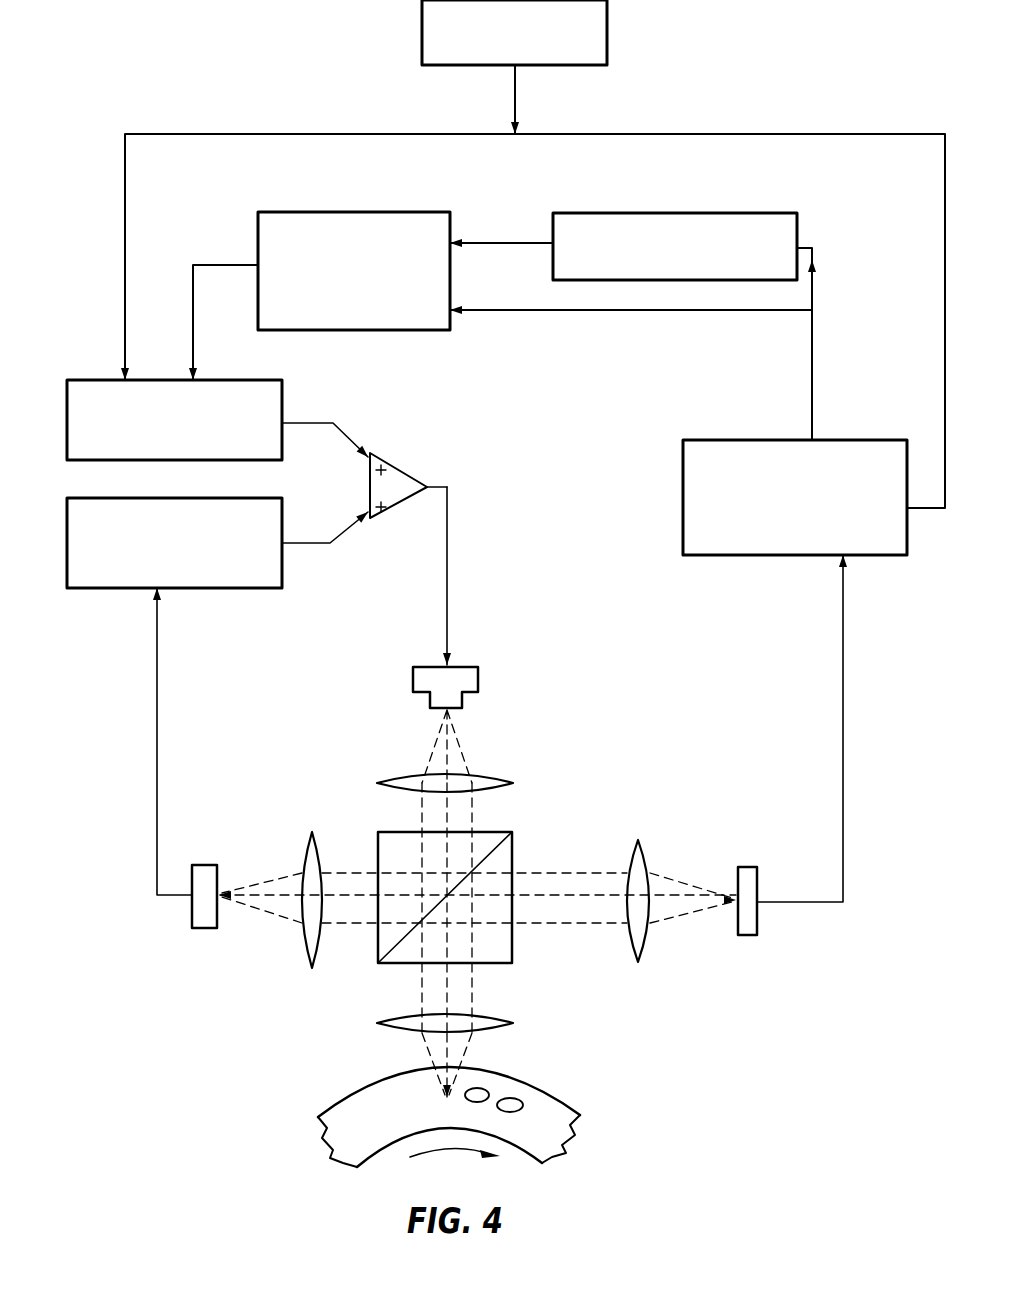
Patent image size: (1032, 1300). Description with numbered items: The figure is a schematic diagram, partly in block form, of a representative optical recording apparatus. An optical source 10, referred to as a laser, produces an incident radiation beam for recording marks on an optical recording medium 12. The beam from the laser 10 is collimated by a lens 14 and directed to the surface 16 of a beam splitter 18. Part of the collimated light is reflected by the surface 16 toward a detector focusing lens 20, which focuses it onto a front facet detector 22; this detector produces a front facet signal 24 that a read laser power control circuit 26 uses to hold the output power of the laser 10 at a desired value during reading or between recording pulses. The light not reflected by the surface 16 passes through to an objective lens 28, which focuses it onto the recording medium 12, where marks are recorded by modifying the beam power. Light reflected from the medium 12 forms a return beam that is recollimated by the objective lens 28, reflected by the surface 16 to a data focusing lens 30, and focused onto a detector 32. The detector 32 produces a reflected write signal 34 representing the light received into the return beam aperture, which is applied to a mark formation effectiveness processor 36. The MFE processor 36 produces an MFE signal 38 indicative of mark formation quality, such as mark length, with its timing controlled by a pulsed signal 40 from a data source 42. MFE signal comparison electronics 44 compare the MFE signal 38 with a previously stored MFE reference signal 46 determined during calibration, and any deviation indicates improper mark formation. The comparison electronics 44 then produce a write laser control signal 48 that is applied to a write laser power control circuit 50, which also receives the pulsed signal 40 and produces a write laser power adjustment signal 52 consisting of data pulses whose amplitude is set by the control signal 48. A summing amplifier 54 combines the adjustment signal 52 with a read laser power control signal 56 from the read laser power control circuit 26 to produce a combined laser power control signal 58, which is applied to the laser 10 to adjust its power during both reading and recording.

The optical source 10 is at (478, 680).
The optical recording medium 12 is at (565, 1133).
The lens 14 is at (490, 776).
The surface 16 is at (498, 843).
The beam splitter 18 is at (515, 858).
The detector focusing lens 20 is at (305, 852).
The front facet detector 22 is at (200, 865).
The front facet signal 24 is at (157, 685).
The read laser power control circuit 26 is at (270, 498).
The objective lens 28 is at (490, 1016).
The data focusing lens 30 is at (645, 855).
The detector 32 is at (745, 867).
The reflected write signal 34 is at (843, 695).
The mark formation effectiveness processor 36 is at (683, 484).
The mark formation effectiveness signal 38 is at (812, 372).
The pulsed signal 40 is at (515, 100).
The data source 42 is at (607, 35).
The MFE signal comparison electronics 44 is at (385, 212).
The MFE reference signal 46 is at (690, 213).
The write laser control signal 48 is at (193, 293).
The write laser power control circuit 50 is at (265, 380).
The write laser power adjustment signal 52 is at (320, 423).
The summing amplifier 54 is at (405, 467).
The read laser power control signal 56 is at (315, 543).
The combined laser power control signal 58 is at (447, 632).